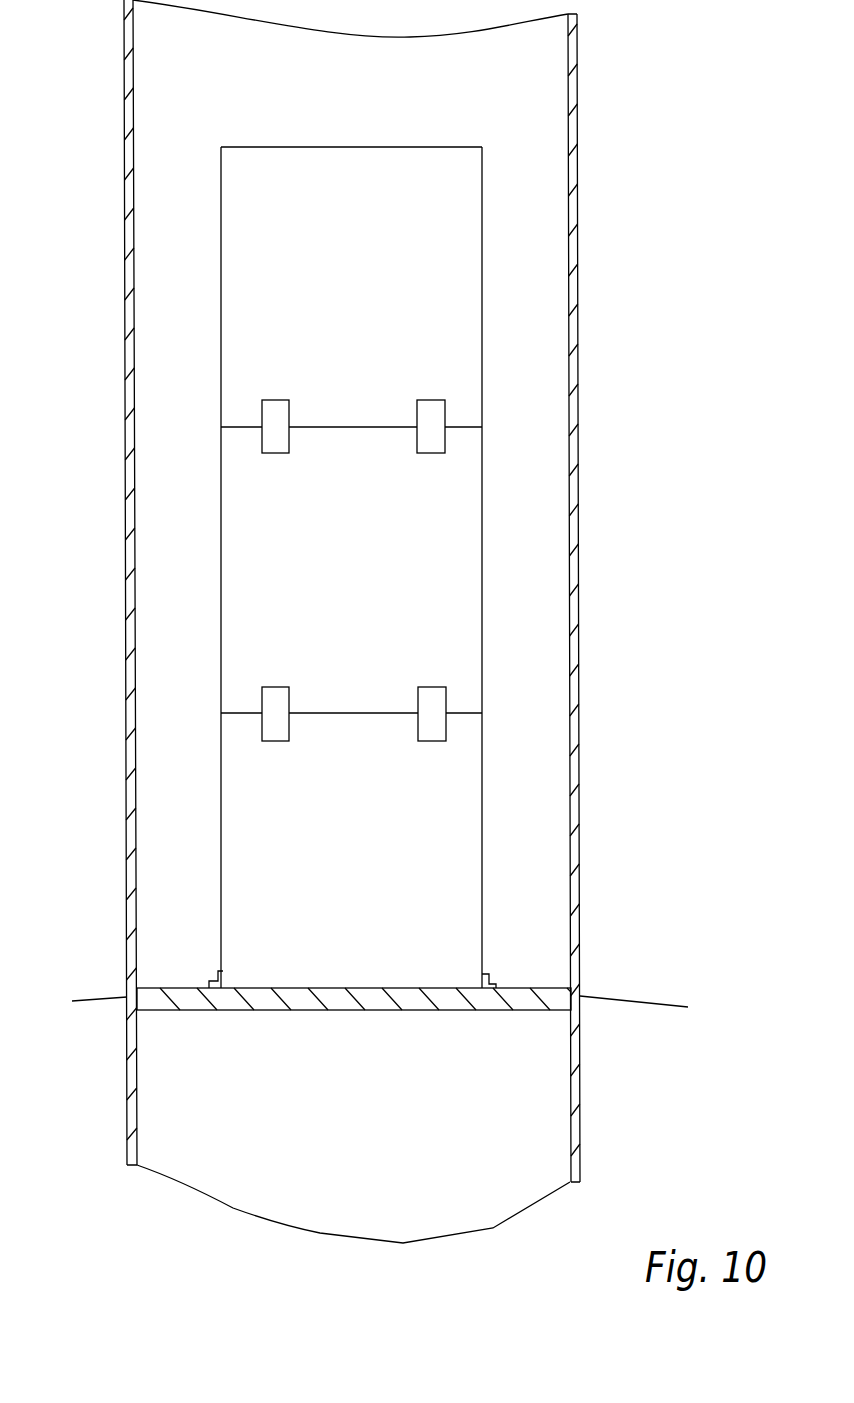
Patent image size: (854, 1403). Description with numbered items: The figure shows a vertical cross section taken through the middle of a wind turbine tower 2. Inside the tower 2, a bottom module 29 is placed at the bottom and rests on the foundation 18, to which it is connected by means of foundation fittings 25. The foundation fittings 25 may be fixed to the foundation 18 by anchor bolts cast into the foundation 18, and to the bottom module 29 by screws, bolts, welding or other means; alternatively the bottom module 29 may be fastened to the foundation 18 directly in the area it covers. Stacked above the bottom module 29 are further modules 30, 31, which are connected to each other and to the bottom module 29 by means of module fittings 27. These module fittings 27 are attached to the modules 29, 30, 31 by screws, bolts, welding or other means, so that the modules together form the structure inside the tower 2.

The tower 2 is at (542, 190).
The foundation 18 is at (150, 985).
The foundation fittings 25 is at (490, 975).
The module fittings 27 is at (438, 435).
The bottom module 29 is at (258, 808).
The module 30 is at (255, 530).
The module 31 is at (237, 214).